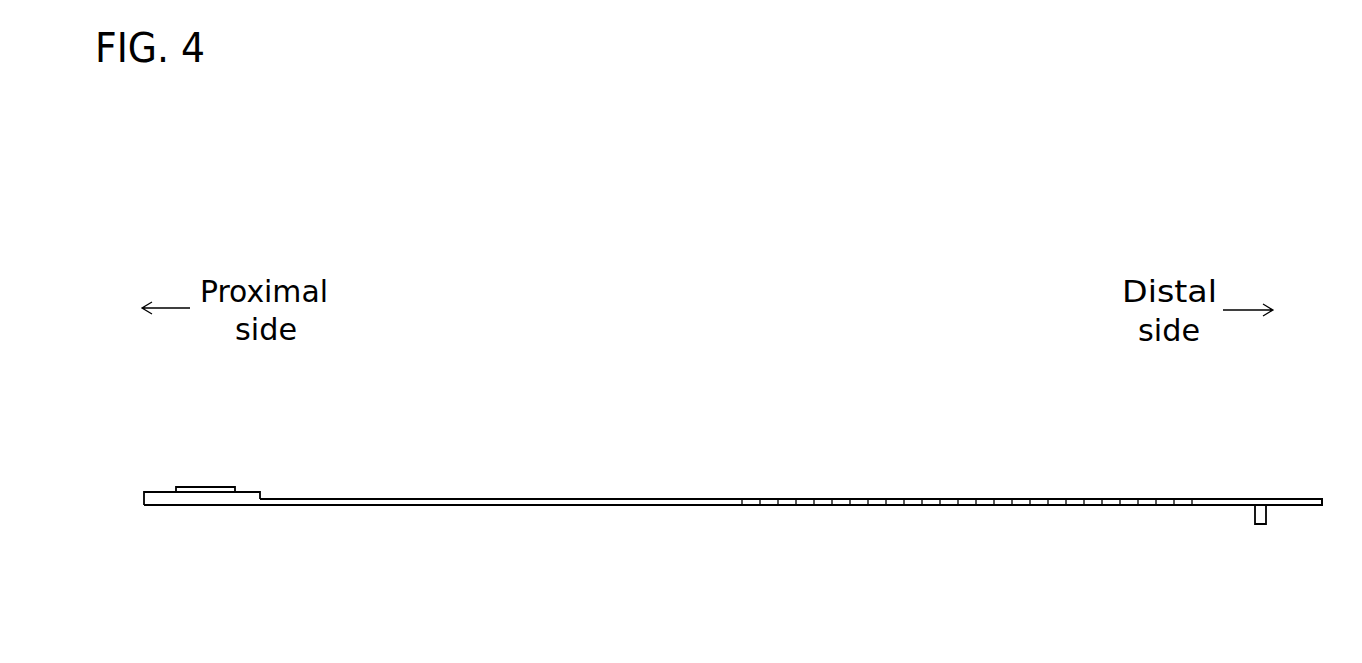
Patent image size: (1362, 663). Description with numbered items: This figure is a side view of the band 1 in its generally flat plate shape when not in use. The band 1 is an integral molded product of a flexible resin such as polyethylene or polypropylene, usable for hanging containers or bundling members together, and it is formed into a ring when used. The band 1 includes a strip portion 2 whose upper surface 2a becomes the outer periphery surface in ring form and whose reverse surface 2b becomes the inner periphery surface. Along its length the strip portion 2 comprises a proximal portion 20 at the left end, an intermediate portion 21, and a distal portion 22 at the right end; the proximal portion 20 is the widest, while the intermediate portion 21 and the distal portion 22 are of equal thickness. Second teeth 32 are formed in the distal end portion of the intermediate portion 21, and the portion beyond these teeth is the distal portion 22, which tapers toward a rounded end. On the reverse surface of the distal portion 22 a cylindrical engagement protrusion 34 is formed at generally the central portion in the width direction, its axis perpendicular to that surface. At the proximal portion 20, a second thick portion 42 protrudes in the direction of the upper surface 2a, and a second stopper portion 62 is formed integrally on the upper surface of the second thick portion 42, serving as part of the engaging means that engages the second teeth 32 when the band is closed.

The band 1 is at (427, 428).
The strip portion 2 is at (677, 487).
The upper surface 2a is at (619, 498).
The reverse surface 2b is at (603, 508).
The proximal portion 20 is at (144, 492).
The intermediate portion 21 is at (722, 498).
The distal portion 22 is at (1210, 498).
The second teeth 32 is at (785, 507).
The engagement protrusion 34 is at (1254, 517).
The second thick portion 42 is at (158, 497).
The second stopper portion 62 is at (212, 487).